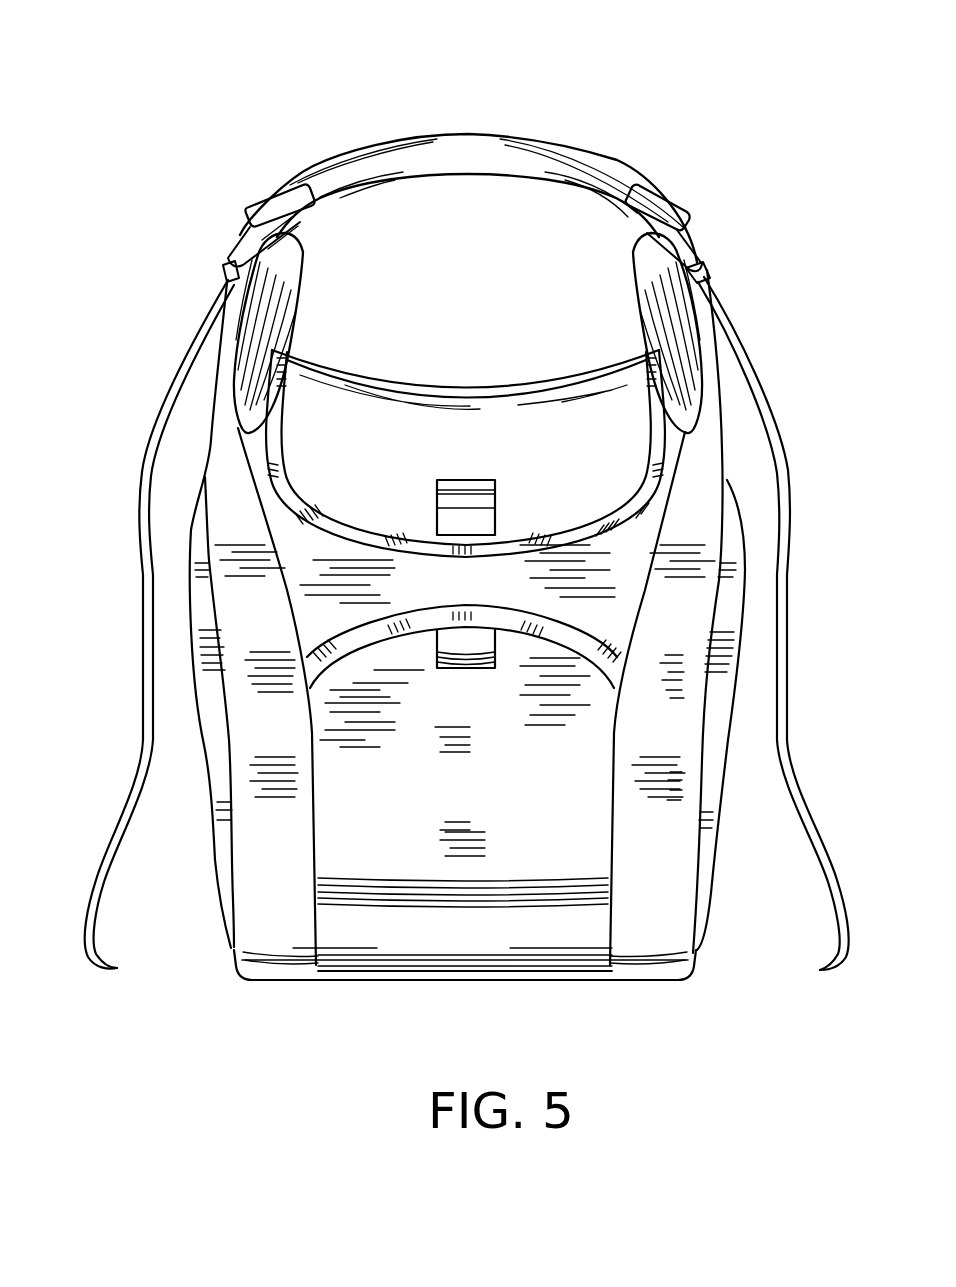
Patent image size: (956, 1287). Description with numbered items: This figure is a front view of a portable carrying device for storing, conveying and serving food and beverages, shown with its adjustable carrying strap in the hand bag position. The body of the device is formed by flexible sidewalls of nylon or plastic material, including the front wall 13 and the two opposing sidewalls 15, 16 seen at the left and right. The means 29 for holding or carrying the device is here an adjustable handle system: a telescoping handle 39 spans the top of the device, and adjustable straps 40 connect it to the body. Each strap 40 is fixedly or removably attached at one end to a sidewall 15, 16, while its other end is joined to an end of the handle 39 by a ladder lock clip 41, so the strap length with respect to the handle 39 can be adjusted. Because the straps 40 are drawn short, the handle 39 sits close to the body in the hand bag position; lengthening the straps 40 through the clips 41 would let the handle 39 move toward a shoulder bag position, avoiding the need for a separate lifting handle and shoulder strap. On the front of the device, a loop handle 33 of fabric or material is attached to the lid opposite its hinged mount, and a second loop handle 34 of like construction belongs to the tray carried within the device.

The front wall 13 is at (372, 925).
The sidewall 15 is at (217, 757).
The sidewall 16 is at (712, 740).
The means for holding or carrying 29 is at (613, 164).
The handle 33 is at (461, 478).
The handle 34 is at (458, 661).
The telescoping handle 39 is at (467, 150).
The adjustable straps 40 is at (168, 400).
The ladder lock clips 41 is at (243, 236).